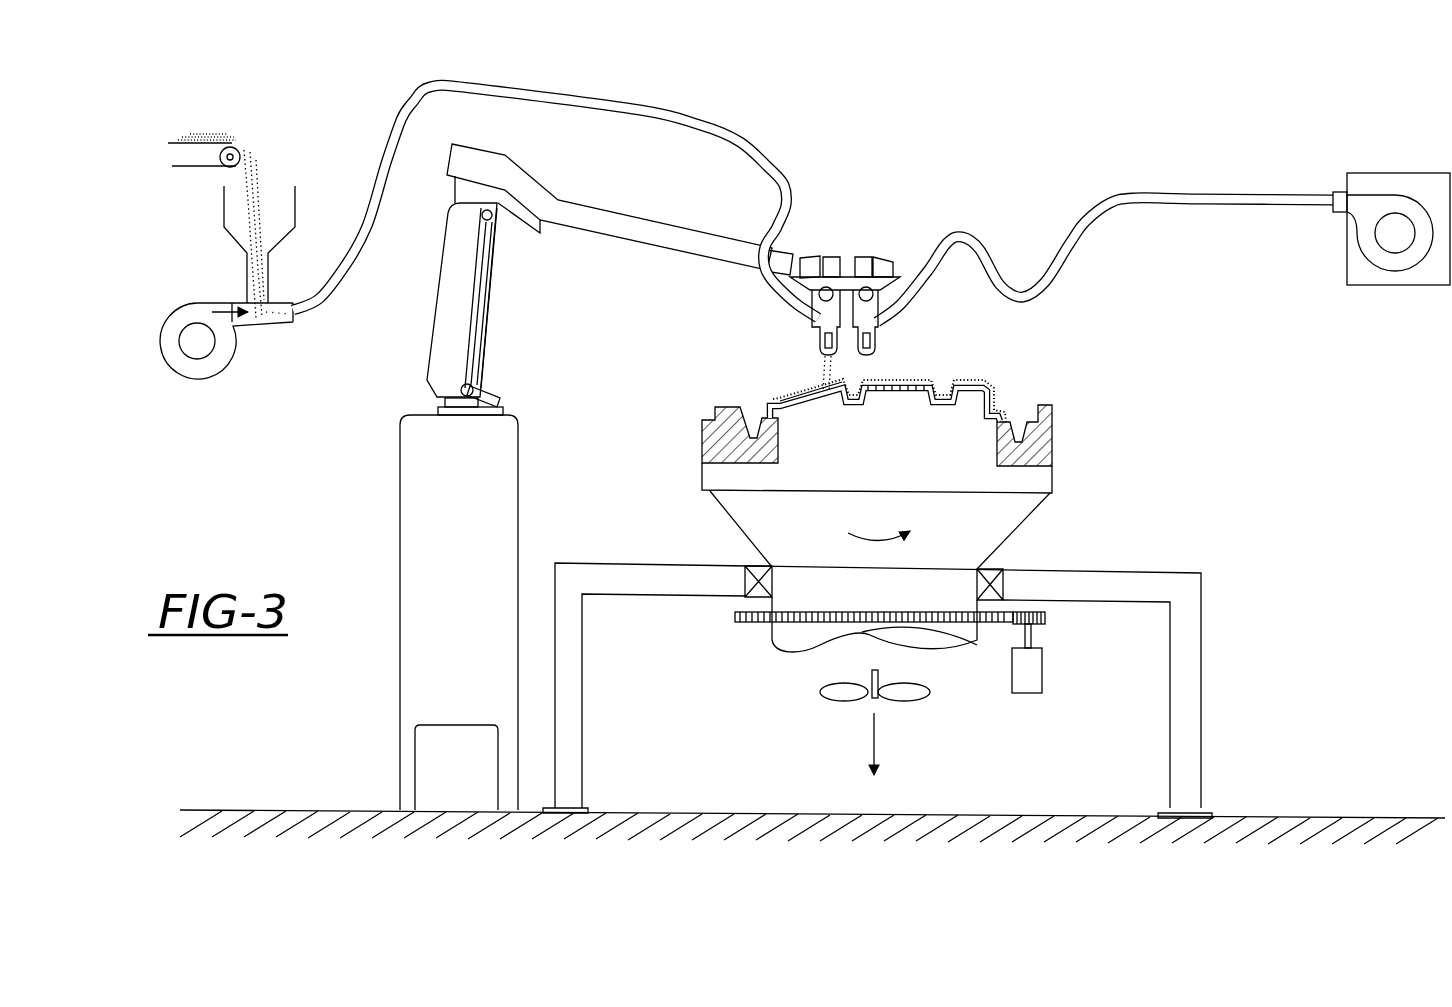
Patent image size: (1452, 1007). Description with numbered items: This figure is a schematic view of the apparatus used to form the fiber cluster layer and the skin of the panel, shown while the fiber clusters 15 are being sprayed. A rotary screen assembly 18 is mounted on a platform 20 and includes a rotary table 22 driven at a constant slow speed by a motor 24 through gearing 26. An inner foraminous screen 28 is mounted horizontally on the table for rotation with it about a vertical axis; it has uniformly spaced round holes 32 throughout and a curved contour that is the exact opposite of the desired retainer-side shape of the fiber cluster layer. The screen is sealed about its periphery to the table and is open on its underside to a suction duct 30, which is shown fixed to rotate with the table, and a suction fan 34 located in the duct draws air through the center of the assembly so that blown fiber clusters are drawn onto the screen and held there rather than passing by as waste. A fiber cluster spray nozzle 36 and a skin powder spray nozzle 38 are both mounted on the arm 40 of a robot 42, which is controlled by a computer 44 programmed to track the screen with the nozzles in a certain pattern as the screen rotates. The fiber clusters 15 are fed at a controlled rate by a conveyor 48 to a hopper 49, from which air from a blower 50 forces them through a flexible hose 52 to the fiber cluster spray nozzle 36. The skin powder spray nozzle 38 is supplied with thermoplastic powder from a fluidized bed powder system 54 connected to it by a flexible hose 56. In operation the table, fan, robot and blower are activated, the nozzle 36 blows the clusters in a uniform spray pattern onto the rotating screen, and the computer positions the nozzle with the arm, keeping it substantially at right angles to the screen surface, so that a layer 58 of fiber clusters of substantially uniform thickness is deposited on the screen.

The fiber clusters 15 is at (247, 158).
The rotary screen assembly 18 is at (885, 444).
The platform 20 is at (1145, 572).
The rotary table 22 is at (702, 440).
The motor 24 is at (1042, 692).
The gearing 26 is at (1013, 624).
The inner foraminous screen 28 is at (912, 392).
The suction duct 30 is at (735, 512).
The round holes 32 is at (815, 396).
The suction fan 34 is at (830, 697).
The fiber cluster spray nozzle 36 is at (820, 330).
The skin powder spray nozzle 38 is at (872, 333).
The arm 40 is at (695, 243).
The robot 42 is at (441, 303).
The computer 44 is at (425, 757).
The conveyor 48 is at (172, 166).
The hopper 49 is at (228, 233).
The blower 50 is at (233, 355).
The flexible hose 52 is at (730, 130).
The fluidized bed powder system 54 is at (1403, 287).
The flexible hose 56 is at (1220, 197).
The layer 58 is at (997, 393).